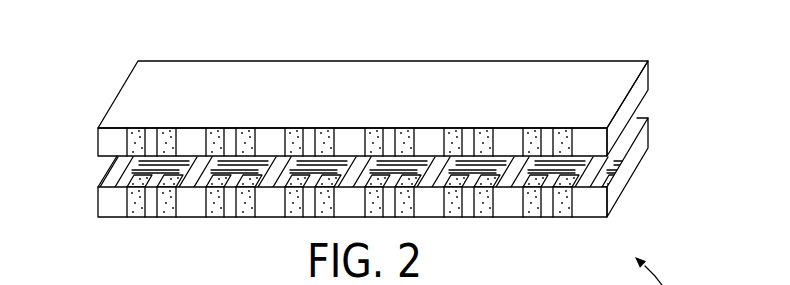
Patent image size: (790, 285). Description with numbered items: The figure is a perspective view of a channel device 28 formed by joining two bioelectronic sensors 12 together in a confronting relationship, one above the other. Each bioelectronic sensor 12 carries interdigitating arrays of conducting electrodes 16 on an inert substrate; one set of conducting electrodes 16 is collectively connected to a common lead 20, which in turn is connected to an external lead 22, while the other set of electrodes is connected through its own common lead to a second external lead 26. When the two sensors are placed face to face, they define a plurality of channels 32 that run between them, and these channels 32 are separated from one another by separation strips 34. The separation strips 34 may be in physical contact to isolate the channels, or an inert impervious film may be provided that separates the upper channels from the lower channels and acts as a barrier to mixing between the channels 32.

The bioelectronic sensor 12 is at (398, 142).
The conducting electrodes 16 is at (358, 221).
The common lead 20 is at (350, 221).
The external lead 22 is at (125, 218).
The external lead 26 is at (168, 217).
The channel device 28 is at (80, 108).
The channels 32 is at (676, 104).
The separation strips 34 is at (197, 180).